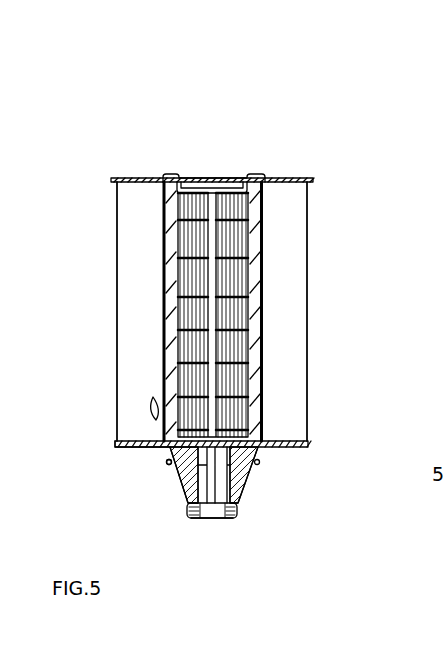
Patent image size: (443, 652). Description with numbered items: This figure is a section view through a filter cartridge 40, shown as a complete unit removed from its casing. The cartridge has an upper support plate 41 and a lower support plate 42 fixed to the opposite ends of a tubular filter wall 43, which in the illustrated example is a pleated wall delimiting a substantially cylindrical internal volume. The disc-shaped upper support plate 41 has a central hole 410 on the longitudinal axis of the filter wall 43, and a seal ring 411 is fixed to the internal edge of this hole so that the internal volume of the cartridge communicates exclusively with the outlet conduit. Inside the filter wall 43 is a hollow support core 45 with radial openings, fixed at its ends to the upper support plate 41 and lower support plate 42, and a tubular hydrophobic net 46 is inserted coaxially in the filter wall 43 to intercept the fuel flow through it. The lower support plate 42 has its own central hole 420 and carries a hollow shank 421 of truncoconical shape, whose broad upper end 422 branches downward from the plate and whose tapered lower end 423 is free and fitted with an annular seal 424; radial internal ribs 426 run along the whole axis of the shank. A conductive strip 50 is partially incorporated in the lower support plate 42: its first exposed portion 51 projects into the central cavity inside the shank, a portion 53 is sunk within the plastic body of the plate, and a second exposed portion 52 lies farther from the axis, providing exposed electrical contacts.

The filter cartridge 40 is at (137, 115).
The upper support plate 41 is at (292, 178).
The central hole 410 is at (222, 174).
The seal ring 411 is at (196, 175).
The lower support plate 42 is at (300, 446).
The central hole 420 is at (265, 441).
The hollow shank 421 is at (246, 476).
The upper end 422 is at (260, 463).
The lower end 423 is at (236, 500).
The annular seal 424 is at (237, 517).
The radial internal ribs 426 is at (197, 486).
The tubular filter wall 43 is at (306, 282).
The hollow support core 45 is at (250, 305).
The hydrophobic net 46 is at (263, 240).
The conductive strip 50 is at (157, 418).
The first exposed portion 51 is at (203, 456).
The second exposed portion 52 is at (170, 452).
The sunk portion 53 is at (167, 464).